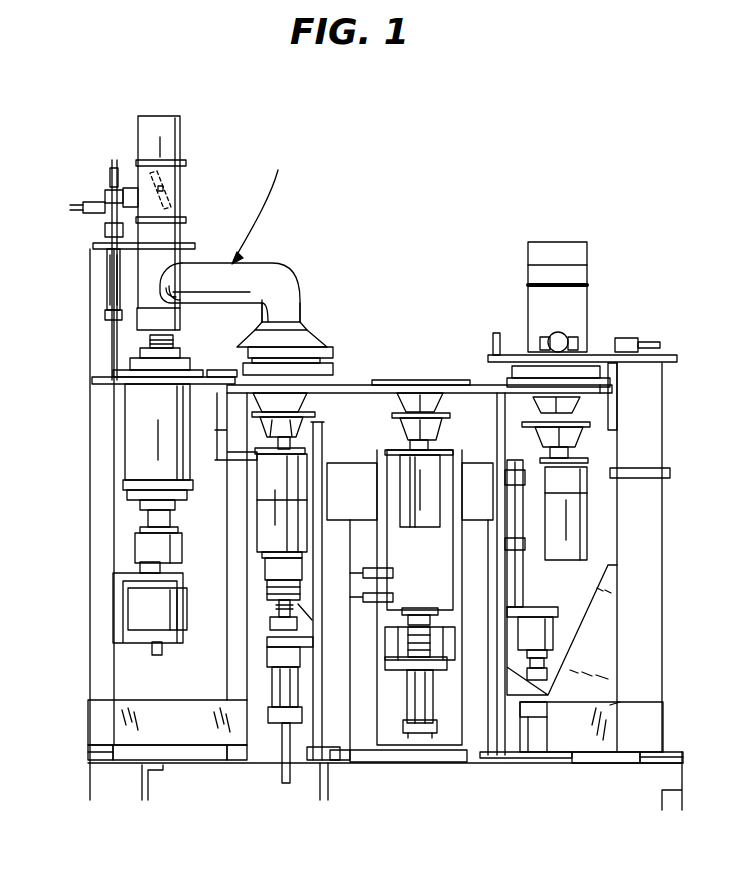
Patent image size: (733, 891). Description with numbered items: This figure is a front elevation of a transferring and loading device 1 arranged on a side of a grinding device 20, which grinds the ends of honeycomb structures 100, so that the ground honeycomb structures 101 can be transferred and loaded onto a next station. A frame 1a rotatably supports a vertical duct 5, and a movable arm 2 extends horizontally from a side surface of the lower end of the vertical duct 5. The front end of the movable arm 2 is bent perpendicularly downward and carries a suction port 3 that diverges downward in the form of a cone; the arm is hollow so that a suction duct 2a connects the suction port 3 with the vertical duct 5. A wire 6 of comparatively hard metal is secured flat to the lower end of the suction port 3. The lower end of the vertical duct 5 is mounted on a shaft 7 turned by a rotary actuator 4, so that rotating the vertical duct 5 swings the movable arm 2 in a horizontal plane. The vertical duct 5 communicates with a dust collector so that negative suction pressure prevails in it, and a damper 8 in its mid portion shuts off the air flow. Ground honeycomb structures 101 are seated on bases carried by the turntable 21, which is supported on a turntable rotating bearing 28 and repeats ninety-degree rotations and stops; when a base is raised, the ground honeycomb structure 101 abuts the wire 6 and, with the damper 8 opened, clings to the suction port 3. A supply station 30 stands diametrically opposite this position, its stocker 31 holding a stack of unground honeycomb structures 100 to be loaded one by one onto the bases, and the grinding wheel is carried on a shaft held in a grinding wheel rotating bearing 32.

The transferring and loading device 1 is at (291, 164).
The frame 1a is at (92, 408).
The movable arm 2 is at (272, 270).
The suction duct 2a is at (300, 318).
The suction port 3 is at (303, 328).
The rotary actuator 4 is at (135, 606).
The vertical duct 5 is at (178, 150).
The wire 6 is at (305, 335).
The shaft 7 is at (140, 350).
The damper 8 is at (168, 185).
The grinding device 20 is at (430, 766).
The turntable 21 is at (480, 386).
The turntable rotating bearing 28 is at (480, 603).
The supply station 30 is at (507, 354).
The control box 31 is at (580, 283).
The grinding wheel rotating bearing 32 is at (665, 493).
The honeycomb structure 100 is at (567, 370).
The ground honeycomb structure 101 is at (310, 355).